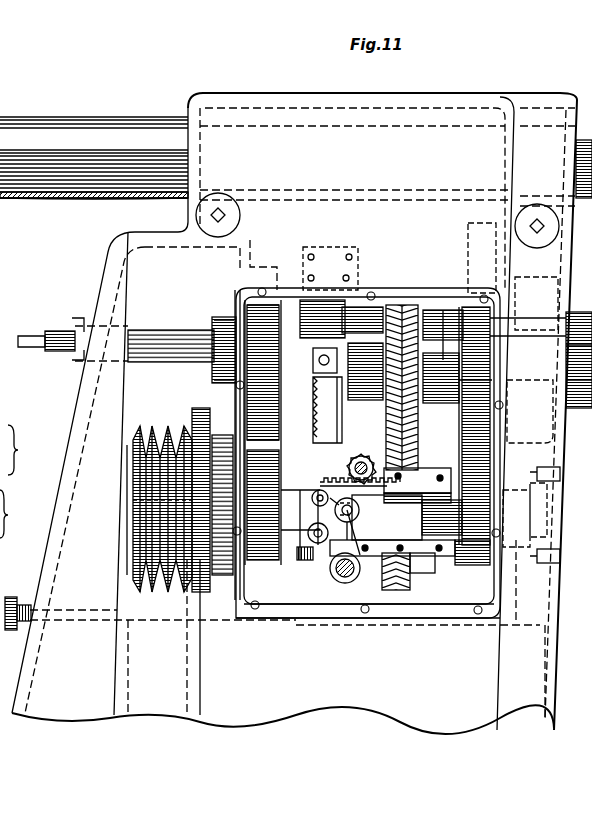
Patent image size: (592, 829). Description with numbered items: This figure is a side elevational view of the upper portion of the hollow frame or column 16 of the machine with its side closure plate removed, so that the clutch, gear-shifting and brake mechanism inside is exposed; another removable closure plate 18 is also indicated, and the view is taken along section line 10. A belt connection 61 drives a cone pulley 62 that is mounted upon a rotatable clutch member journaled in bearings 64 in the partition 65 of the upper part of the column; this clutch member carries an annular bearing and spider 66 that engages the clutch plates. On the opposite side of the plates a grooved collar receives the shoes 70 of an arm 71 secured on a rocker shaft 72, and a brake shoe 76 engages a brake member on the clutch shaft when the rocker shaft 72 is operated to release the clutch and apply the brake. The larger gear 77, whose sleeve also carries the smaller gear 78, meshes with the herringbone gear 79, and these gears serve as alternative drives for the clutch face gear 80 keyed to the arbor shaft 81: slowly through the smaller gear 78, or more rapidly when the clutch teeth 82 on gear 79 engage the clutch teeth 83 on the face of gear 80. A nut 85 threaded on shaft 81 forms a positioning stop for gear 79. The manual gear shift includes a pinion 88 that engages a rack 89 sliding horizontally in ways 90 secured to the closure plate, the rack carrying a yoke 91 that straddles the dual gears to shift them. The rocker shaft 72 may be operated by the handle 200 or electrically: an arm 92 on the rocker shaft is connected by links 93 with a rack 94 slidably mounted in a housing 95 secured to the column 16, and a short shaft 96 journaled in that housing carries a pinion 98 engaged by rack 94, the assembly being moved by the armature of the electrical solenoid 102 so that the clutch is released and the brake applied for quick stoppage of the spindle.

The section line 10- 10 is at (296, 600).
The hollow frame or column 16 is at (176, 232).
The removable closure plate 18 is at (68, 402).
The handle 200 is at (22, 490).
The arbor shaft 81 is at (160, 340).
The cone pulley 62 is at (173, 428).
The belt connection 61 is at (193, 573).
The bearings 64 is at (217, 573).
The partition 65 is at (243, 570).
The annular bearing and spider 66 is at (263, 572).
The short shaft 96 is at (248, 403).
The pinion 98 is at (280, 423).
The electrical solenoid 102 is at (320, 285).
The nut 85 is at (365, 300).
The housing 95 is at (332, 408).
The clutch teeth 83 is at (457, 307).
The herringbone gear 79 is at (396, 305).
The clutch teeth 82 is at (440, 358).
The clutch face gear 80 is at (478, 333).
The pinion 88 is at (376, 455).
The rack 94 is at (325, 484).
The rack 89 is at (305, 530).
The links 93 is at (297, 505).
The gear 77 is at (410, 458).
The yoke 91 is at (440, 478).
The shoes 70 is at (406, 487).
The arm 92 is at (327, 550).
The rocker shaft 72 is at (343, 575).
The arm 71 is at (342, 515).
The brake shoe 76 is at (413, 573).
The ways 90 is at (419, 553).
The smaller gear 78 is at (469, 550).